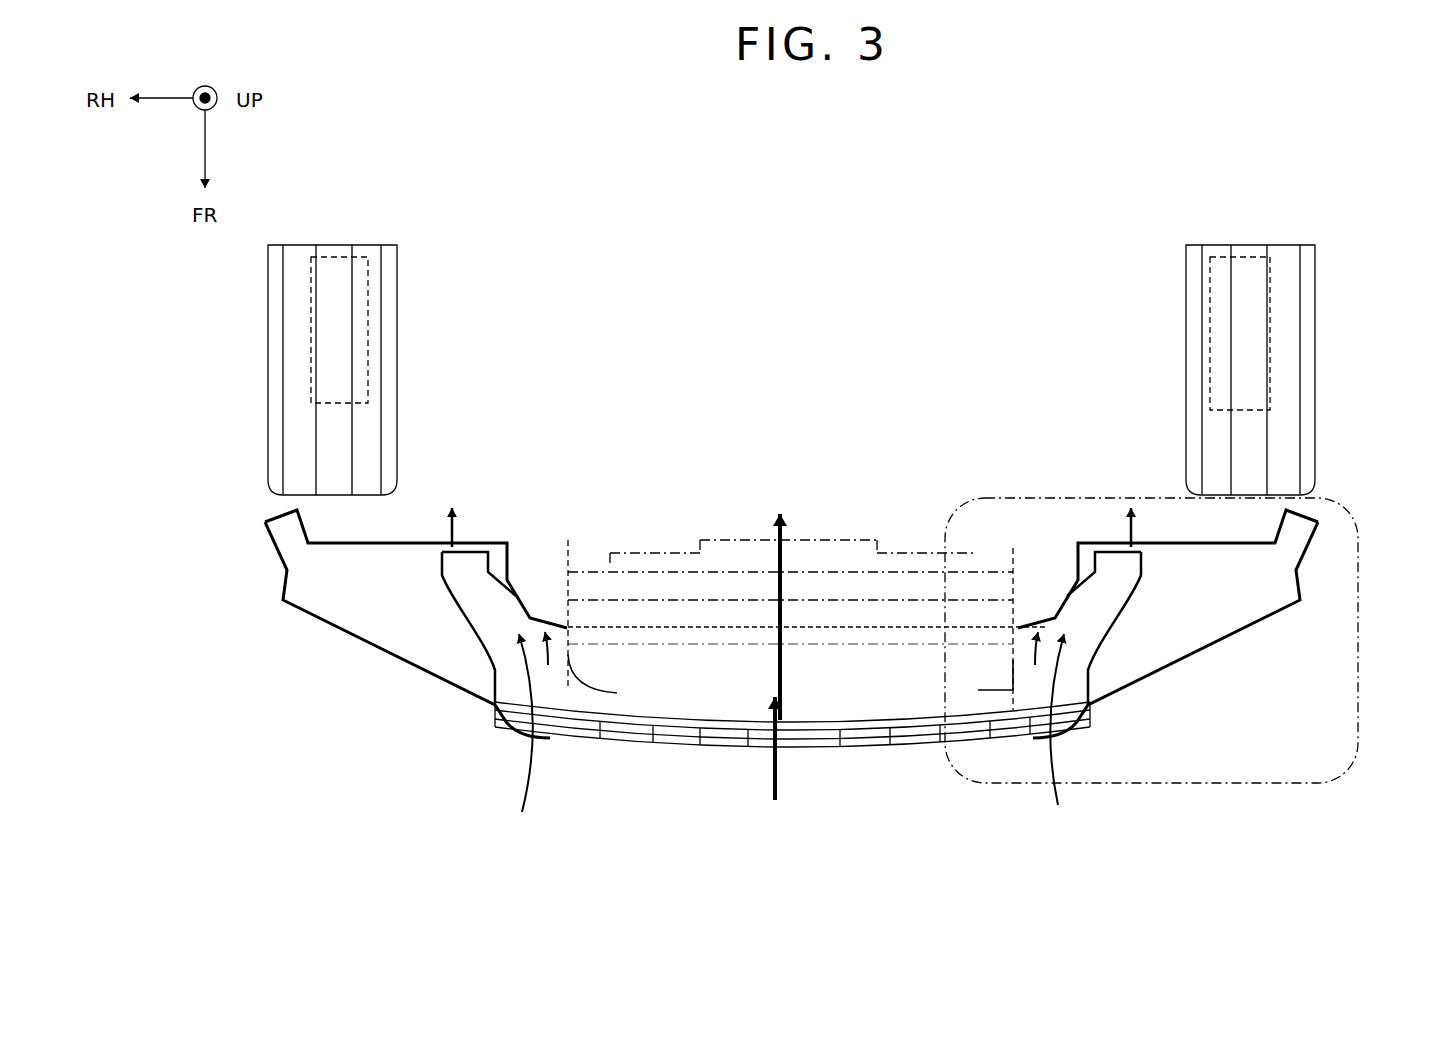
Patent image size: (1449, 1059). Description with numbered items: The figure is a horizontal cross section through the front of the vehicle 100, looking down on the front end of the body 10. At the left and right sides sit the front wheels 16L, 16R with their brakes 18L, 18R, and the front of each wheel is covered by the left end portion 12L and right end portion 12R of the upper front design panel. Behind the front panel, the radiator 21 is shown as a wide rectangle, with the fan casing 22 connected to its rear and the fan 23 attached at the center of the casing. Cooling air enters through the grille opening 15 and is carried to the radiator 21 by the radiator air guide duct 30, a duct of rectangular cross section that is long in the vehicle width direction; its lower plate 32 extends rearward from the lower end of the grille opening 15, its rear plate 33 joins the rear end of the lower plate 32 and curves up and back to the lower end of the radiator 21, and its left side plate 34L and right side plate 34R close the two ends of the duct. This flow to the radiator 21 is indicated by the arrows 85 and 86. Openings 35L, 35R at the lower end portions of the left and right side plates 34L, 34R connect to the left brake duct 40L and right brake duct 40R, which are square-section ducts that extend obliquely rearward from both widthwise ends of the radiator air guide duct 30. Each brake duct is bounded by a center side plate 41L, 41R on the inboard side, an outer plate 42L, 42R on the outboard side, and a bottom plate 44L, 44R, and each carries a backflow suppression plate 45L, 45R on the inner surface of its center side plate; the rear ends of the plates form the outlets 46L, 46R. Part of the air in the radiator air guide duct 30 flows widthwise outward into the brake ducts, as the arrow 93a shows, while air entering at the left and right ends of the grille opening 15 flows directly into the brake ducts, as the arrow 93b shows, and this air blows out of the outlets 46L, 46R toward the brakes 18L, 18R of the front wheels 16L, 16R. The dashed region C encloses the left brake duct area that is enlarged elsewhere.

The vehicle 100 is at (172, 386).
The body 10 is at (274, 583).
The right end portion 12R is at (445, 577).
The left end portion 12L is at (1138, 577).
The grille opening 15 is at (880, 750).
The right front wheel 16R is at (268, 310).
The left front wheel 16L is at (1315, 352).
The brake 18R is at (385, 287).
The brake 18L is at (1215, 295).
The radiator 21 is at (642, 570).
The fan casing 22 is at (680, 553).
The fan 23 is at (746, 540).
The radiator air guide duct 30 is at (815, 700).
The lower plate 32 is at (905, 685).
The rear plate 33 is at (895, 627).
The right side plate 34R is at (568, 575).
The opening 35R is at (579, 504).
The left side plate 34L is at (1013, 667).
The opening 35L is at (974, 438).
The right brake duct 40R is at (473, 636).
The left brake duct 40L is at (1110, 636).
The center side plate 41R is at (512, 585).
The center side plate 41L is at (1062, 592).
The outer plate 42R is at (462, 607).
The outer plate 42L is at (1140, 620).
The bottom plate 44R is at (493, 657).
The bottom plate 44L is at (1090, 657).
The backflow suppression plate 45R is at (508, 740).
The backflow suppression plate 45L is at (1075, 753).
The outlet 46R is at (470, 542).
The outlet 46L is at (1113, 542).
The arrow 85 is at (770, 780).
The arrow 86 is at (785, 560).
The arrow 93a is at (590, 700).
The arrow 93b is at (462, 600).
The region C (enlarged in FIG. 4) C is at (1363, 602).